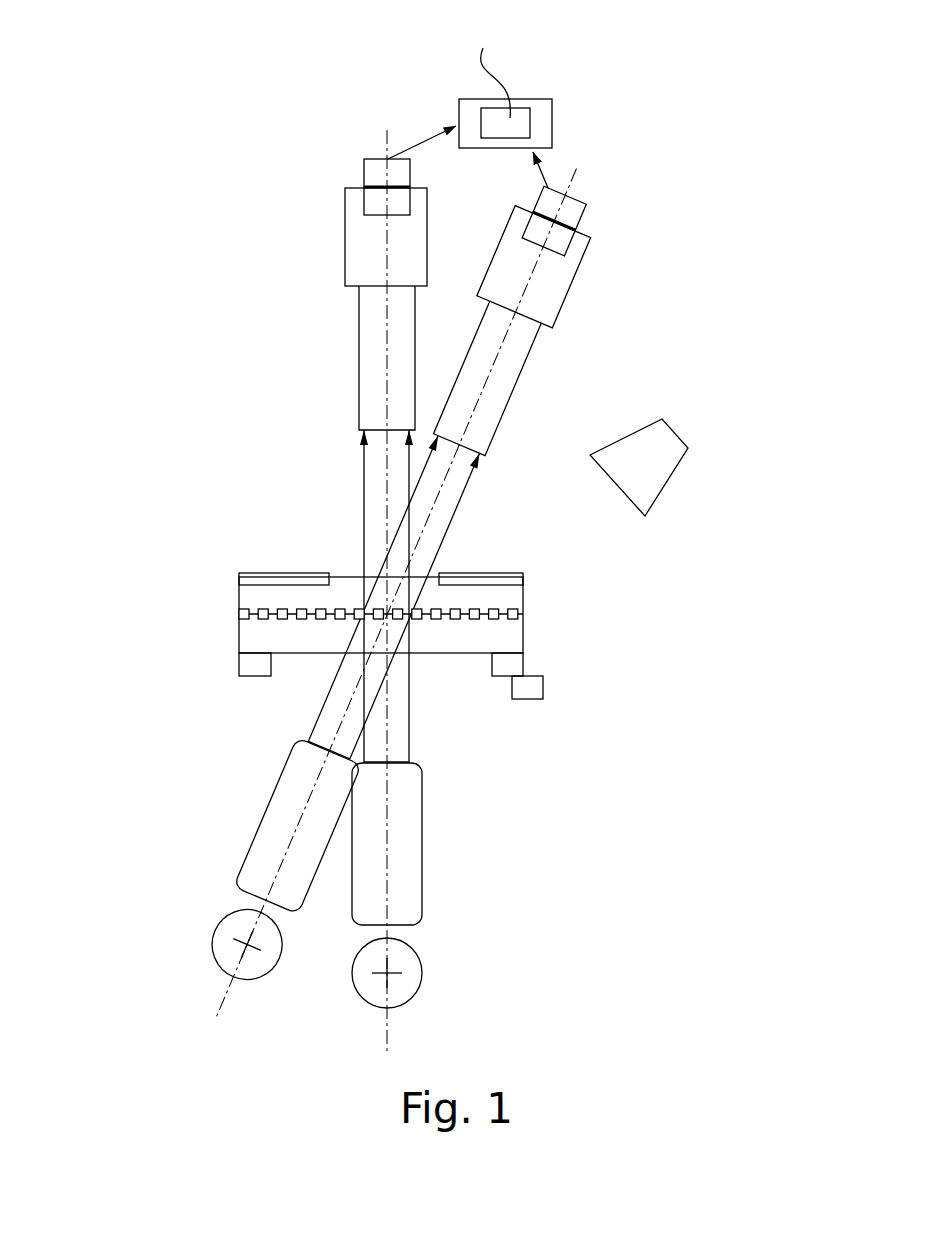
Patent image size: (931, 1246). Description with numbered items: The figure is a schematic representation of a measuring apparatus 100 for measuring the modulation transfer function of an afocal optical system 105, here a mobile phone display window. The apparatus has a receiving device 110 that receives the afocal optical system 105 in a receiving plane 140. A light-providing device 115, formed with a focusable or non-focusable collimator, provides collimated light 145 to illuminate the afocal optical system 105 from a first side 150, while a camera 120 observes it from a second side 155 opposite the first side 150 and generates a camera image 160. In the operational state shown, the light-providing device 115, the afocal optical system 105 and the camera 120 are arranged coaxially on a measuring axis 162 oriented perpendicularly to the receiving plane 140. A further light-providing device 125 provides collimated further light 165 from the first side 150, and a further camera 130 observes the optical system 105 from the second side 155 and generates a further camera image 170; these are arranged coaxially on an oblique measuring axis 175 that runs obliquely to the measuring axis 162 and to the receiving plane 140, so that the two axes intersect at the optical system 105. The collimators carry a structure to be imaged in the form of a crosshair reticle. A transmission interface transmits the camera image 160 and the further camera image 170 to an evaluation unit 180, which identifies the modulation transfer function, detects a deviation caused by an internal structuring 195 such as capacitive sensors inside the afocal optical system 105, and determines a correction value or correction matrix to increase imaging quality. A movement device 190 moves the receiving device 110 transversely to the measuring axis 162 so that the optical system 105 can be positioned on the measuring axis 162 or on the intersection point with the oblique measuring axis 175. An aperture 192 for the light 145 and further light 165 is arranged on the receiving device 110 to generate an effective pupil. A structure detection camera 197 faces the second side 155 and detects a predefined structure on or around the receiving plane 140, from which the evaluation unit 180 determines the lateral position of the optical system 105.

The measuring apparatus 100 is at (338, 125).
The afocal optical system 105 is at (388, 603).
The receiving device 110 is at (253, 663).
The light-providing device 115 is at (404, 844).
The camera 120 is at (378, 244).
The further light-providing device 125 is at (272, 798).
The further camera 130 is at (558, 290).
The receiving plane 140 is at (321, 619).
The light 145 is at (420, 739).
The first side 150 is at (450, 669).
The second side 155 is at (348, 566).
The camera image 160 is at (378, 202).
The measuring axis 162 is at (385, 340).
The further light 165 is at (306, 718).
The further camera image 170 is at (567, 238).
The oblique measuring axis 175 is at (497, 358).
The evaluation unit 180 is at (545, 125).
The movement device 190 is at (532, 688).
The aperture 192 is at (272, 578).
The internal structuring 195 is at (237, 613).
The structure detection camera 197 is at (662, 465).